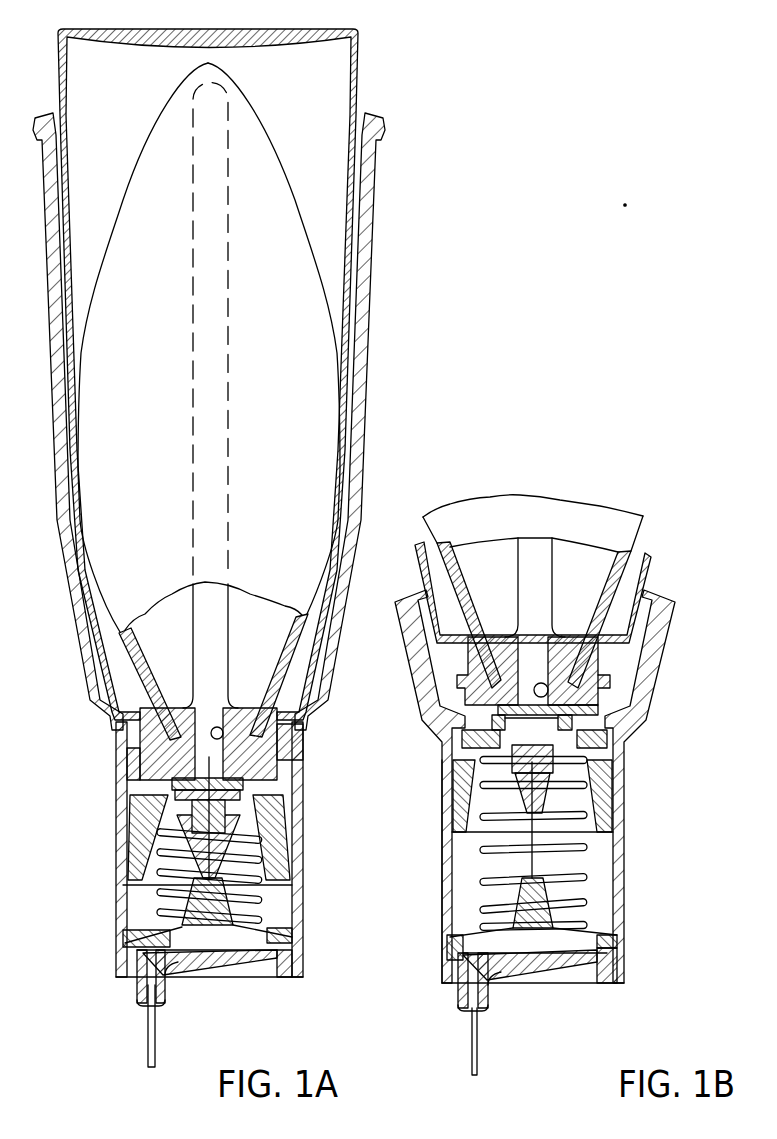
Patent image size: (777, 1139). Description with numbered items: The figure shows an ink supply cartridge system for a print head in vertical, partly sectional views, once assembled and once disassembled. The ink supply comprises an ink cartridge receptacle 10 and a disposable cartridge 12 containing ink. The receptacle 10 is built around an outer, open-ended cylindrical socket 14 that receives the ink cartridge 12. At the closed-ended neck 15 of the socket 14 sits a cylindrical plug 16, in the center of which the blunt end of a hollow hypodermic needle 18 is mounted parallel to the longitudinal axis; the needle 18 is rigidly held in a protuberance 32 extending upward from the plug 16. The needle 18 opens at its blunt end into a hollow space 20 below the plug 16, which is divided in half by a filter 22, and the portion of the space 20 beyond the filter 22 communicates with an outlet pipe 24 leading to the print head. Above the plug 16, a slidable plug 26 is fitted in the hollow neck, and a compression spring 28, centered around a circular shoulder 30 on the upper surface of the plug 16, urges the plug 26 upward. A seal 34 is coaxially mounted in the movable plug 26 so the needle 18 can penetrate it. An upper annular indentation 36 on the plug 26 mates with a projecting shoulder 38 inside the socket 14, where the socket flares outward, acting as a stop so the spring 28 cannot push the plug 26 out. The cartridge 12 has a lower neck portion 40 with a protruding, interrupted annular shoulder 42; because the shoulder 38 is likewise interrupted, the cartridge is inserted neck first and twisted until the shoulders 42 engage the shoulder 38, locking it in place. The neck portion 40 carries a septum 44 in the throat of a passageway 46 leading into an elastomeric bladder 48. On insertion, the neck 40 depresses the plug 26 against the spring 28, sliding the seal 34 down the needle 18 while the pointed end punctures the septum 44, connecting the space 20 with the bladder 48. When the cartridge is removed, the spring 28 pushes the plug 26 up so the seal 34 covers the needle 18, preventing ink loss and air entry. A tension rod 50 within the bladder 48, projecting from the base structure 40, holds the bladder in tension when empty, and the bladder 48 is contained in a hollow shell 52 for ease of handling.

In FIG. 1A, the ink cartridge receptacle 10 is at (118, 735).
In FIG. 1B, the ink cartridge receptacle 10 is at (450, 773).
In FIG. 1A, the disposable cartridge 12 is at (368, 103).
In FIG. 1A, the cylindrical socket 14 is at (362, 353).
In FIG. 1B, the cylindrical socket 14 is at (662, 652).
In FIG. 1A, the neck 15 is at (300, 860).
In FIG. 1A, the cylindrical plug 16 is at (293, 933).
In FIG. 1A, the hypodermic needle 18 is at (187, 800).
In FIG. 1B, the hypodermic needle 18 is at (535, 850).
In FIG. 1A, the hollow space 20 is at (163, 940).
In FIG. 1B, the hollow space 20 is at (498, 942).
In FIG. 1A, the filter 22 is at (140, 967).
In FIG. 1B, the filter 22 is at (620, 960).
In FIG. 1A, the outlet pipe 24 is at (148, 1025).
In FIG. 1B, the outlet pipe 24 is at (478, 1043).
In FIG. 1A, the slidable plug 26 is at (275, 820).
In FIG. 1B, the slidable plug 26 is at (596, 783).
In FIG. 1A, the compression spring 28 is at (262, 905).
In FIG. 1B, the compression spring 28 is at (589, 878).
In FIG. 1A, the circular shoulder 30 is at (163, 917).
In FIG. 1A, the protuberance 32 is at (195, 885).
In FIG. 1B, the protuberance 32 is at (552, 913).
In FIG. 1A, the seal 34 is at (250, 827).
In FIG. 1B, the seal 34 is at (553, 755).
In FIG. 1A, the annular indentation 36 is at (218, 805).
In FIG. 1A, the projecting shoulder 38 is at (288, 742).
In FIG. 1B, the projecting shoulder 38 is at (632, 748).
In FIG. 1A, the neck portion 40 is at (128, 720).
In FIG. 1B, the neck portion 40 is at (600, 663).
In FIG. 1A, the interrupted shoulder 42 is at (132, 752).
In FIG. 1B, the interrupted shoulder 42 is at (612, 683).
In FIG. 1A, the septum 44 is at (170, 785).
In FIG. 1B, the septum 44 is at (602, 713).
In FIG. 1A, the passageway 46 is at (223, 734).
In FIG. 1B, the passageway 46 is at (580, 700).
In FIG. 1A, the elastomeric bladder 48 is at (316, 245).
In FIG. 1B, the elastomeric bladder 48 is at (622, 568).
In FIG. 1A, the tension rod 50 is at (212, 592).
In FIG. 1B, the tension rod 50 is at (545, 570).
In FIG. 1A, the hollow shell 52 is at (362, 78).
In FIG. 1B, the hollow shell 52 is at (647, 588).